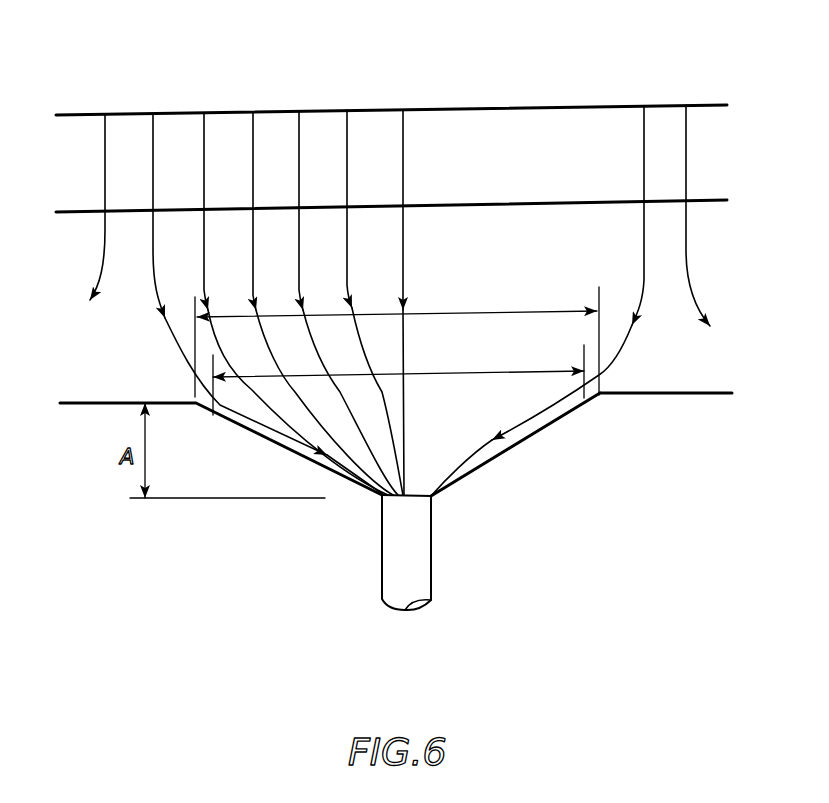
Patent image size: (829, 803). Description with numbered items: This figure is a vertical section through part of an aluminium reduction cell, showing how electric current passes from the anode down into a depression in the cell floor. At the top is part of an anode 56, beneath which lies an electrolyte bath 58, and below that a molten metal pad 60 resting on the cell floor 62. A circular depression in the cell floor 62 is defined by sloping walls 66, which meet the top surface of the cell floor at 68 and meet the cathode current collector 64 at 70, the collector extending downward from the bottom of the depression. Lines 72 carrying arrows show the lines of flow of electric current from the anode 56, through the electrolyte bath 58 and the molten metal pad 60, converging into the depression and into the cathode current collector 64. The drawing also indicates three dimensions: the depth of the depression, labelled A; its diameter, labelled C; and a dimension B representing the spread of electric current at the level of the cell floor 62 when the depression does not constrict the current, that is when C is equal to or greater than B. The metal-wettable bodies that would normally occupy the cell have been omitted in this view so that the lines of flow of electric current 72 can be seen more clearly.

The anode 56 is at (537, 42).
The electrolyte bath 58 is at (541, 171).
The molten metal pad 60 is at (546, 281).
The cell floor 62 is at (709, 432).
The cathode current collector 64 is at (413, 584).
The sloping walls 66 is at (270, 442).
The junction of sloping walls with cell floor top surface 68 is at (603, 397).
The junction of sloping walls with collector 70 is at (433, 498).
The lines of flow of electric current 72 is at (347, 240).